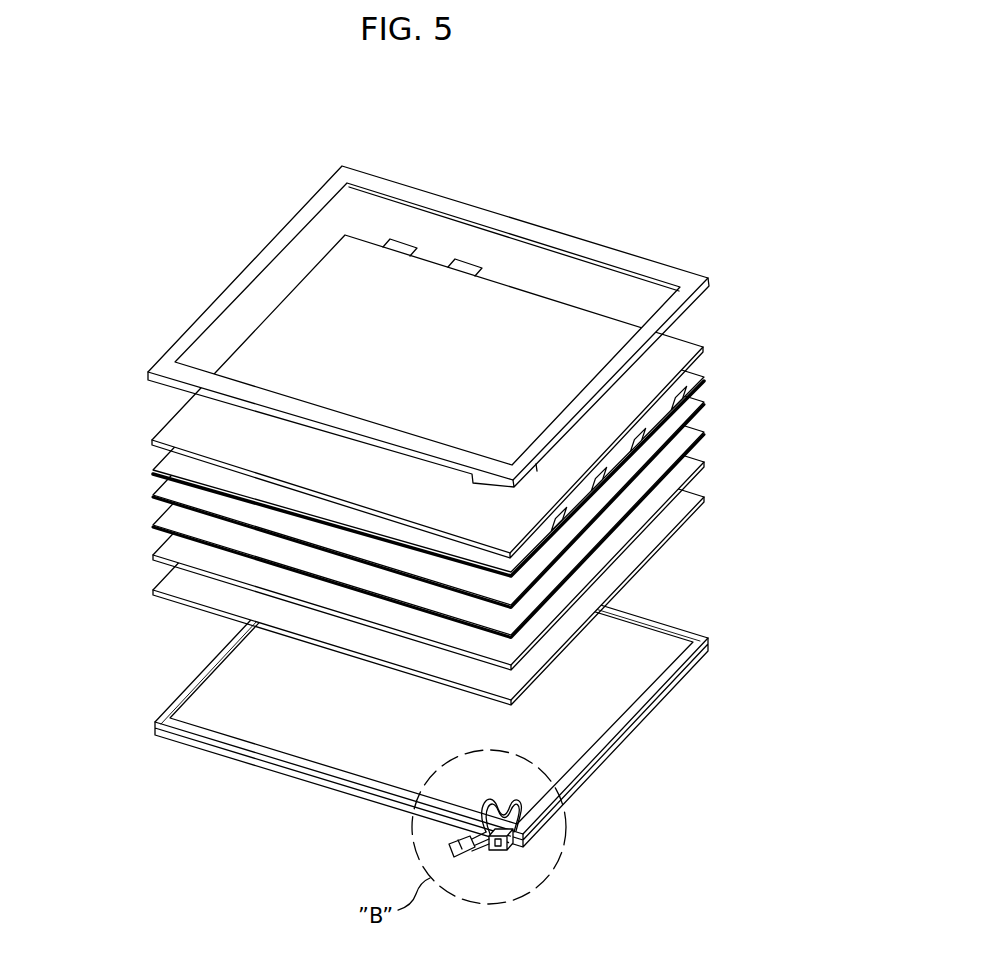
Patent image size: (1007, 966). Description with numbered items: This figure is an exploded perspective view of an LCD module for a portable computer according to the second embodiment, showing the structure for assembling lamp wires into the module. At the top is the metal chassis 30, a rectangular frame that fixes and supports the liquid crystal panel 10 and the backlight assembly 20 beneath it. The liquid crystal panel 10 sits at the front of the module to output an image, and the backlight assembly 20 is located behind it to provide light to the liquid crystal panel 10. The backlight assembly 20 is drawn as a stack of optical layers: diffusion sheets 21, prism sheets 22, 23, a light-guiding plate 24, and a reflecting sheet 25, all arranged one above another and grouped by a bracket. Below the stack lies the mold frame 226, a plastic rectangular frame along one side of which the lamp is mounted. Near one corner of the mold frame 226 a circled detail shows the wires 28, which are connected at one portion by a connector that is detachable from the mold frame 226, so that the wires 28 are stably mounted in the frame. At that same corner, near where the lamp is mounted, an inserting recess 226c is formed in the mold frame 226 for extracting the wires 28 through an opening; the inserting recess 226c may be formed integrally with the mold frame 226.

The metal chassis 30 is at (236, 293).
The liquid crystal panel 10 is at (182, 423).
The backlight assembly 20 is at (87, 448).
The diffusion sheets 21 is at (174, 459).
The prism sheet 22 is at (173, 490).
The prism sheet 23 is at (173, 518).
The light-guiding plate 24 is at (173, 547).
The reflecting sheet 25 is at (175, 582).
The mold frame 226 is at (165, 732).
The inserting recess 226c is at (492, 842).
The wires 28 is at (518, 836).